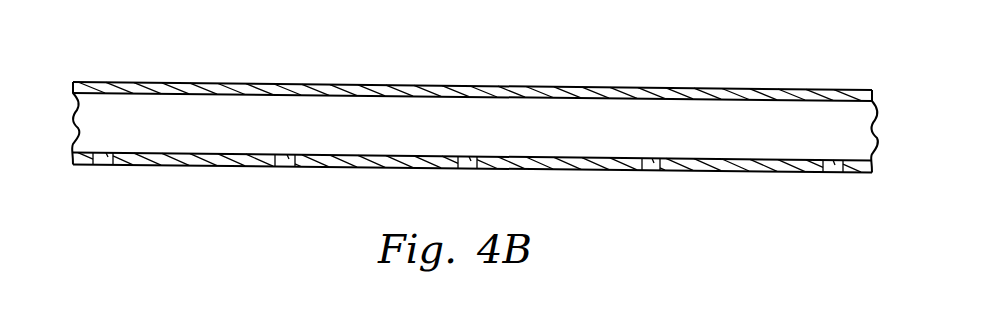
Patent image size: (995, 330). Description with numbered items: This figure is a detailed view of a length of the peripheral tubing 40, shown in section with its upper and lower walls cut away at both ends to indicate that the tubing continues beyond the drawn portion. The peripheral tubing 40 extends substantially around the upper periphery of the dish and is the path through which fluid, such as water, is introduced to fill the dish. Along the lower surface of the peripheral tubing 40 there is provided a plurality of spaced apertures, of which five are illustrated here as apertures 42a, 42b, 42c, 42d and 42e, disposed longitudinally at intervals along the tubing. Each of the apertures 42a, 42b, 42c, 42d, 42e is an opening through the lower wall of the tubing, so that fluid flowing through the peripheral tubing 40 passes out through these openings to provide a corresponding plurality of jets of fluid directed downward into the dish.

The peripheral tubing 40 is at (553, 90).
The aperture 42a is at (105, 168).
The aperture 42b is at (290, 168).
The aperture 42c is at (468, 170).
The aperture 42d is at (651, 171).
The aperture 42e is at (833, 173).